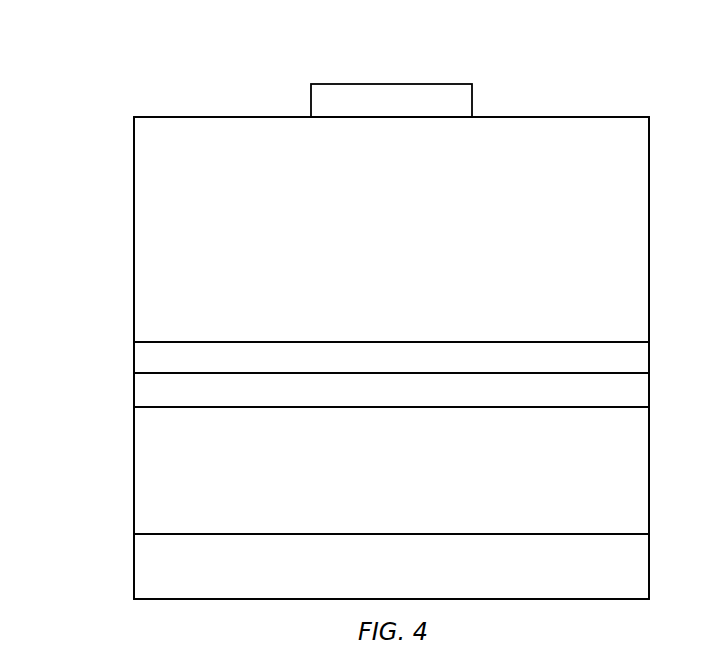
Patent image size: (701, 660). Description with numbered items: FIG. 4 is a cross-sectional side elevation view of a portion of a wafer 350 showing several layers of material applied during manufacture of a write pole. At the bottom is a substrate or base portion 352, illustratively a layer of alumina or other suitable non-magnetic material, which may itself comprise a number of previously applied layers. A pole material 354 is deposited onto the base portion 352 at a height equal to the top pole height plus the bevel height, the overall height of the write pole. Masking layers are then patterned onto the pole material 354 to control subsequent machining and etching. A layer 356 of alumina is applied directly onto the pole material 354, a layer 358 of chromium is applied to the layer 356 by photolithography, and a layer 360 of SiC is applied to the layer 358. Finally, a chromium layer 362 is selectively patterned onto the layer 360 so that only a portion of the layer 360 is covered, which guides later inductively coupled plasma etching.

The wafer 350 is at (145, 102).
The base portion 352 is at (372, 576).
The pole material 354 is at (372, 480).
The layer 356 is at (372, 400).
The layer 358 is at (372, 368).
The layer 360 is at (372, 240).
The layer 362 is at (372, 110).